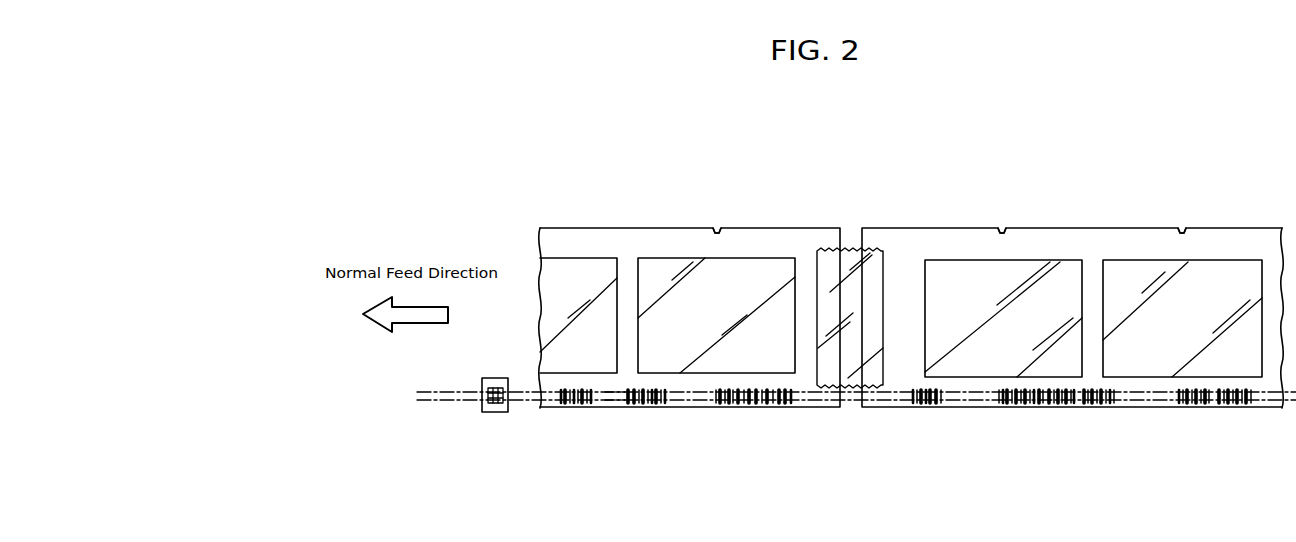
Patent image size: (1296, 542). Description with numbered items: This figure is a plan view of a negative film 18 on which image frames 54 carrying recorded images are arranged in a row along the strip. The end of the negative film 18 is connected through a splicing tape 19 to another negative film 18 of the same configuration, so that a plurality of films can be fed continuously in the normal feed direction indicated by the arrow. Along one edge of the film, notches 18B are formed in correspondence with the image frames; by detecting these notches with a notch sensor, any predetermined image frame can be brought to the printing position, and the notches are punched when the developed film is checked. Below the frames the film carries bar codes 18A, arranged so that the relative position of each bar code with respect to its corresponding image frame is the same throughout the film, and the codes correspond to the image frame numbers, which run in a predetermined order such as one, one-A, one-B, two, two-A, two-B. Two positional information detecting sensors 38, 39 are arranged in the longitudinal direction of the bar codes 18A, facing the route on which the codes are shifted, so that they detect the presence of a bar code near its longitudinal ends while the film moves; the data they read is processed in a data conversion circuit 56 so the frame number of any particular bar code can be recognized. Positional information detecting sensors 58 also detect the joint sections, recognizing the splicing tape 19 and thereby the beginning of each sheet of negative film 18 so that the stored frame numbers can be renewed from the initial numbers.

The negative film 18 is at (659, 228).
The bar codes 18A is at (555, 404).
The notches 18B is at (719, 230).
The splicing tape 19 is at (852, 255).
The image frame 54 is at (595, 268).
The data conversion circuit 56 is at (653, 396).
The positional information detecting sensor 39 is at (492, 378).
The positional information detecting sensor 38 is at (492, 412).
The positional information detecting sensors 58 is at (487, 380).